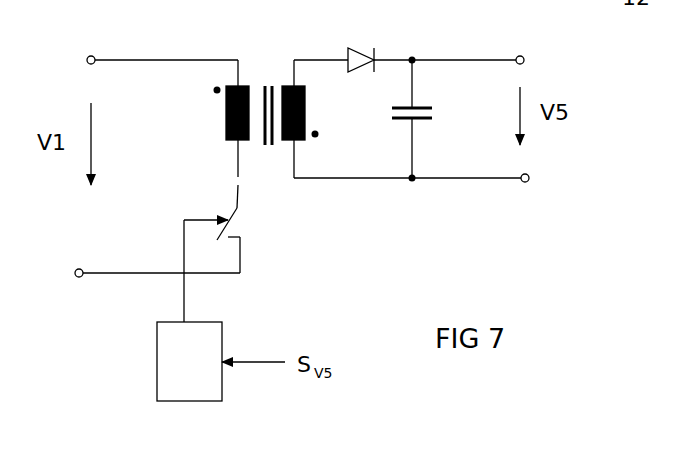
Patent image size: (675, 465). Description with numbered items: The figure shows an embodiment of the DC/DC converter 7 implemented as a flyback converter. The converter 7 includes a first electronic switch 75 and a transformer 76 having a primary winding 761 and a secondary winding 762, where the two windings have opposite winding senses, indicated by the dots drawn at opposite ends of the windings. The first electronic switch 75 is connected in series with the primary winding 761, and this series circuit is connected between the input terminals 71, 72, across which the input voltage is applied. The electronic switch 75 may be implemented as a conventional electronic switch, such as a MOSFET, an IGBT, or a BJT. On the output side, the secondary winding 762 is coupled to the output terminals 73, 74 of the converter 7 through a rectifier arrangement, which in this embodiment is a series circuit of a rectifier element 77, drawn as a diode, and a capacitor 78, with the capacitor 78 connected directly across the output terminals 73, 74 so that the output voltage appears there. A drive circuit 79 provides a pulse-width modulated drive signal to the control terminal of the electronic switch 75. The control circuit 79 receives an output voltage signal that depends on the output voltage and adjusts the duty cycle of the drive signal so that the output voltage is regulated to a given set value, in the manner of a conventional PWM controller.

The converter 7 is at (558, 142).
The input terminal 71 is at (93, 52).
The input terminal 72 is at (79, 278).
The output terminal 73 is at (520, 53).
The output terminal 74 is at (527, 183).
The first electronic switch 75 is at (248, 219).
The transformer 76 is at (266, 58).
The primary winding 761 is at (224, 118).
The secondary winding 762 is at (307, 115).
The rectifier element 77 is at (358, 48).
The capacitor 78 is at (437, 116).
The drive circuit 79 is at (155, 378).